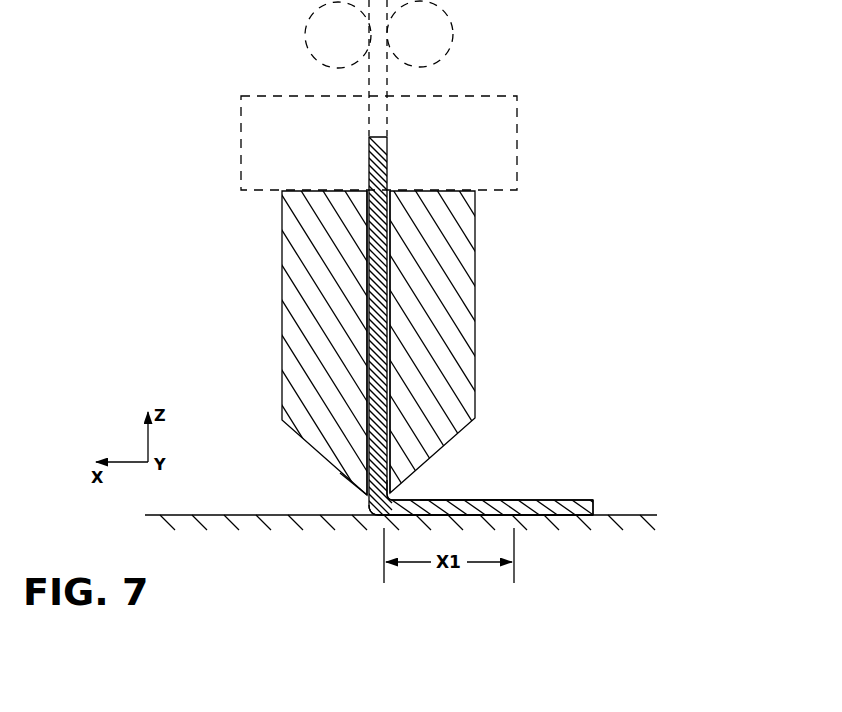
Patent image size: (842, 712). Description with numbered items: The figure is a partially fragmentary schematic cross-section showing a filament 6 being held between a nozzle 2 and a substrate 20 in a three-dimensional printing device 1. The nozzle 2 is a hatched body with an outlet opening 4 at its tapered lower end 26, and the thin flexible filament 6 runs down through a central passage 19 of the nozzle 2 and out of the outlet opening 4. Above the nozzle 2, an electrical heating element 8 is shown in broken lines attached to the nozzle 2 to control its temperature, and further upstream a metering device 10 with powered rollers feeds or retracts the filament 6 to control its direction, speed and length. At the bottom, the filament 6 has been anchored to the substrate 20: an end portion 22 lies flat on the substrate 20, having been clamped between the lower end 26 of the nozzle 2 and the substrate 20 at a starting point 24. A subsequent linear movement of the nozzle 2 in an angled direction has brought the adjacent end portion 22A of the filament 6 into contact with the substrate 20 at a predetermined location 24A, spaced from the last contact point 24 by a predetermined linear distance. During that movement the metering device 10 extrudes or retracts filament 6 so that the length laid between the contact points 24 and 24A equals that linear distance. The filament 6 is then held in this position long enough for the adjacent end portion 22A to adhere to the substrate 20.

The 3D printing device 1 is at (170, 282).
The nozzle 2 is at (280, 327).
The outlet opening 4 is at (367, 497).
The filament 6 is at (391, 158).
The electrical heating element 8 is at (238, 128).
The metering device 10 is at (456, 17).
The channel in forming block 19 is at (389, 300).
The substrate 20 is at (616, 513).
The end portion 22 is at (533, 499).
The adjacent end portion 22A is at (468, 499).
The starting point 24 is at (517, 521).
The predetermined location 24A is at (380, 519).
The lower end 26 is at (367, 497).